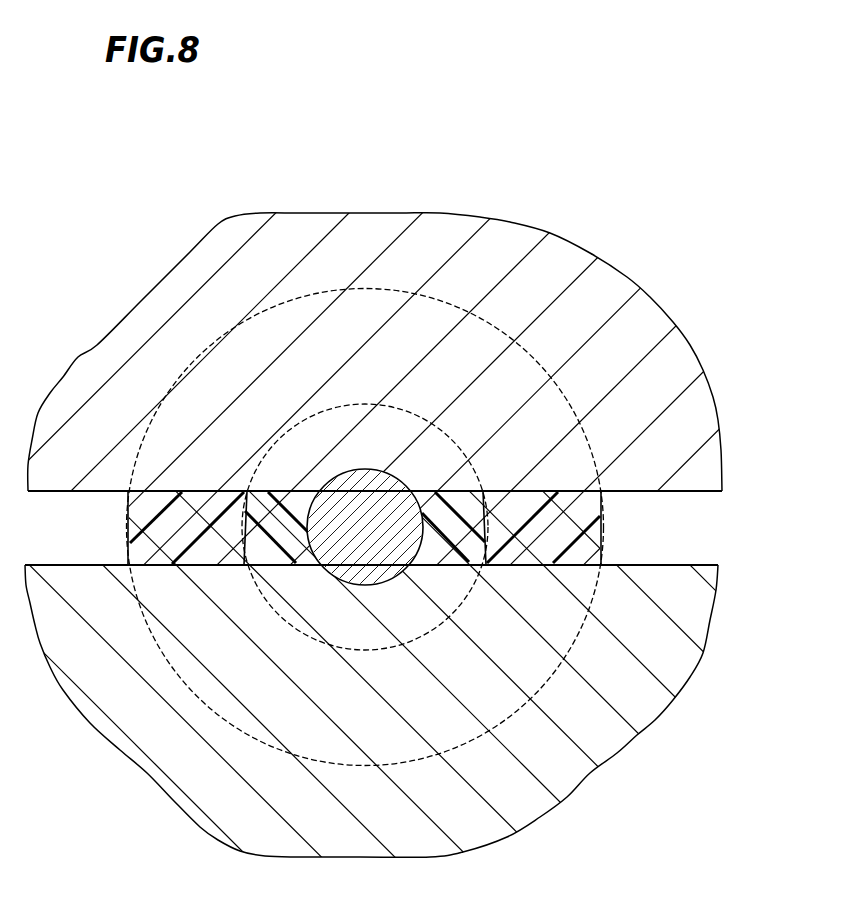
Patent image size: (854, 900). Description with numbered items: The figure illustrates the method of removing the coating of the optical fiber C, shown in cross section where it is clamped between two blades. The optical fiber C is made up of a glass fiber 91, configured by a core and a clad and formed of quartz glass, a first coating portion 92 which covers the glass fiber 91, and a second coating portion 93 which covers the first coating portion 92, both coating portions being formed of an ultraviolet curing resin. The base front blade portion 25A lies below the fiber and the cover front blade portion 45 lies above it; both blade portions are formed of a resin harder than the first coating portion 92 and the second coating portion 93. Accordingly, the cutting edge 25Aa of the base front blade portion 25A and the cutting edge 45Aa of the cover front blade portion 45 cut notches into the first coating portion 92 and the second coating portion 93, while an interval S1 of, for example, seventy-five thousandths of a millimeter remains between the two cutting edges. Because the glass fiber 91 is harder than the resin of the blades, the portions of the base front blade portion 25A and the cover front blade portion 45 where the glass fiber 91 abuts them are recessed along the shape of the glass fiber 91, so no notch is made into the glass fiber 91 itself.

The cover front blade portion 45 is at (617, 413).
The cutting edge of the cover front blade portion 45Aa is at (618, 491).
The base front blade portion 25A is at (615, 673).
The cutting edge of the base front blade portion 25Aa is at (618, 565).
The glass fiber 91 is at (393, 471).
The first coating portion 92 is at (407, 404).
The second coating portion 93 is at (440, 303).
The optical fiber C is at (394, 291).
The interval S1 is at (682, 491).